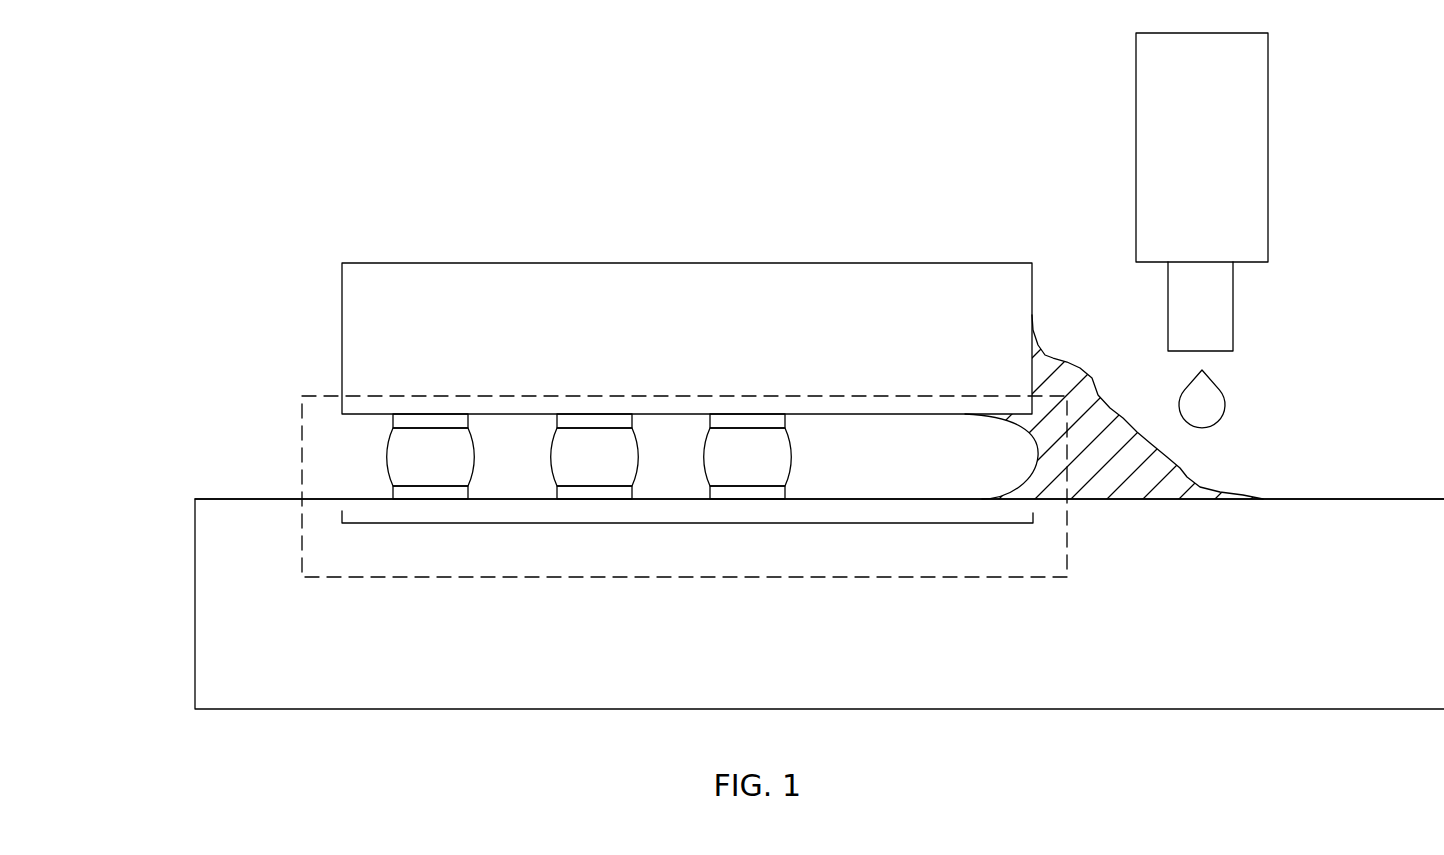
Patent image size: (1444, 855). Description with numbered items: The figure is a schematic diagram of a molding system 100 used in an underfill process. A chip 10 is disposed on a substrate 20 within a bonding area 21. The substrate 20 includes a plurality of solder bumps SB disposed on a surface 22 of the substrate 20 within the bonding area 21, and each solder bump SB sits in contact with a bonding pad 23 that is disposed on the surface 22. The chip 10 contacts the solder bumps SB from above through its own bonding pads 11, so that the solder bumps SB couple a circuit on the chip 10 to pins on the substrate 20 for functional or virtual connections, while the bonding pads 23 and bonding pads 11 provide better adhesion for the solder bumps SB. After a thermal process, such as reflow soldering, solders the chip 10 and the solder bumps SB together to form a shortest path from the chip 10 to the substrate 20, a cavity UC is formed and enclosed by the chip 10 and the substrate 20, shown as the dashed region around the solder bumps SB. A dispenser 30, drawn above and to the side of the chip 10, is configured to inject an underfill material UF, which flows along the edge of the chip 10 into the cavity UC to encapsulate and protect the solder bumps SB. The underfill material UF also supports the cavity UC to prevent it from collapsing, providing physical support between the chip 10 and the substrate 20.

The molding system 100 is at (799, 123).
The chip 10 is at (704, 357).
The bonding pad 11 is at (432, 424).
The solder bump SB is at (414, 471).
The bonding pad 23 is at (437, 495).
The substrate 20 is at (227, 607).
The surface 22 is at (269, 494).
The bonding area 21 is at (687, 541).
The cavity UC is at (1072, 532).
The underfill material UF is at (1180, 464).
The dispenser 30 is at (1219, 166).